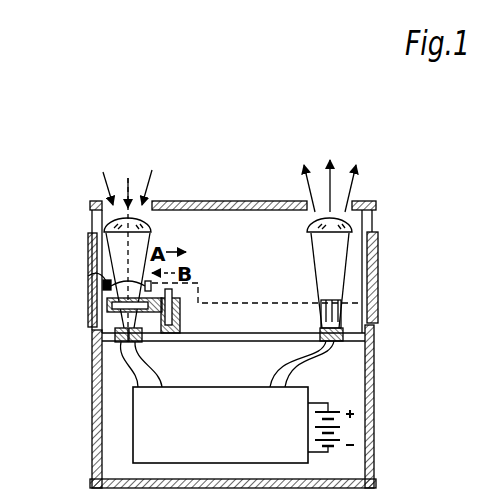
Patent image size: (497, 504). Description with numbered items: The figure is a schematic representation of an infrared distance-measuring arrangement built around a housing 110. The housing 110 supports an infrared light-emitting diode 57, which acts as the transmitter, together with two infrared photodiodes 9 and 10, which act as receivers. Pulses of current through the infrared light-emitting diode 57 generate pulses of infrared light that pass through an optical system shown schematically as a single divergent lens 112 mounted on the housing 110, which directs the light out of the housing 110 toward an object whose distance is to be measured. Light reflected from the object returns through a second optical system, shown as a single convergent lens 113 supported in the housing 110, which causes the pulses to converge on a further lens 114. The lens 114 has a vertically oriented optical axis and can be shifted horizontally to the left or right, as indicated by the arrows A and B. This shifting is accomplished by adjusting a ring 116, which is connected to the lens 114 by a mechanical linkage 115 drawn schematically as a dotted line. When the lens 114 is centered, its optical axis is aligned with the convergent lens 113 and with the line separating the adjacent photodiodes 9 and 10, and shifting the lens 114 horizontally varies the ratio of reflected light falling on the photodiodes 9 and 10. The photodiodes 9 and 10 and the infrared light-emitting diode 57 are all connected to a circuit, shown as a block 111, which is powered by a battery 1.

The battery 1 is at (340, 427).
The infrared photodiode 9 is at (92, 358).
The infrared photodiode 10 is at (145, 356).
The infrared light-emitting diode 57 is at (340, 342).
The housing 110 is at (362, 383).
The circuit block 111 is at (133, 415).
The divergent lens 112 is at (352, 222).
The convergent lens 113 is at (92, 217).
The lens 114 is at (90, 273).
The mechanical linkage 115 is at (243, 302).
The ring 116 is at (378, 268).